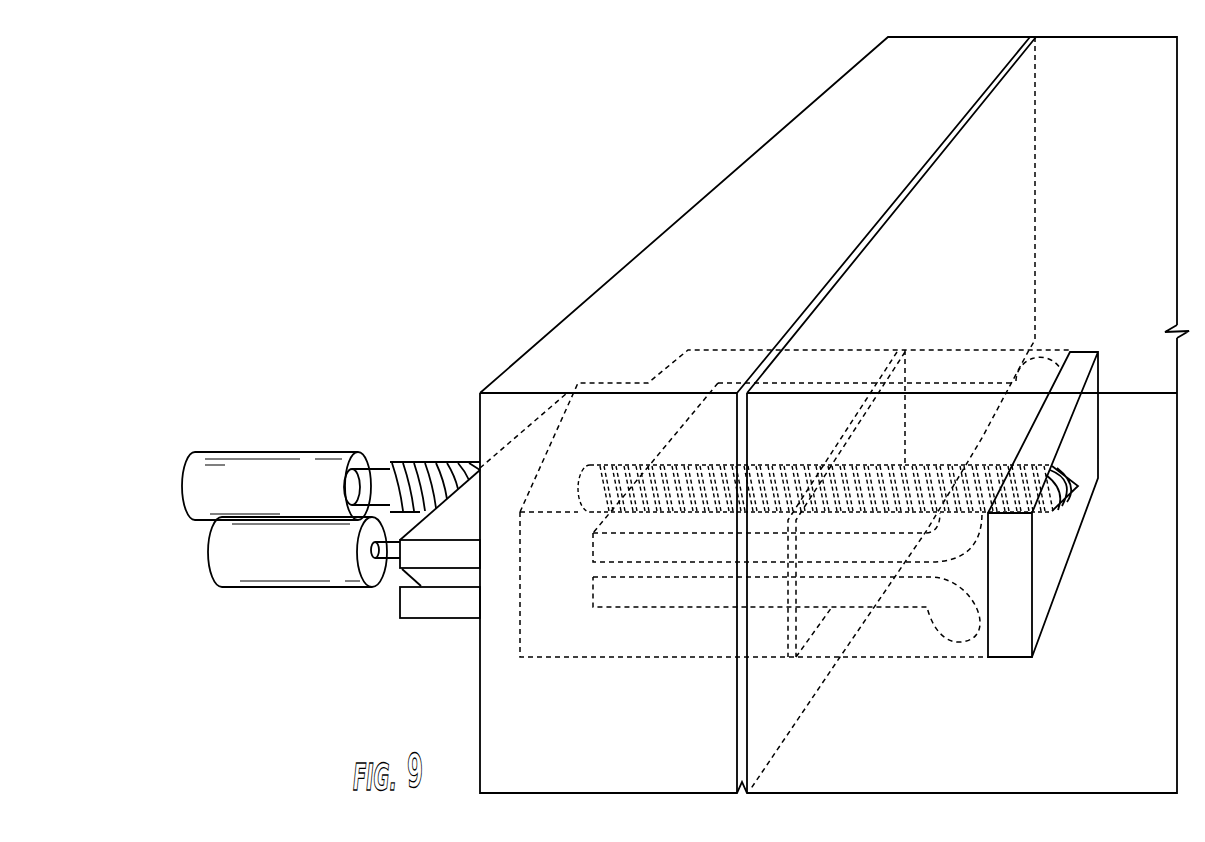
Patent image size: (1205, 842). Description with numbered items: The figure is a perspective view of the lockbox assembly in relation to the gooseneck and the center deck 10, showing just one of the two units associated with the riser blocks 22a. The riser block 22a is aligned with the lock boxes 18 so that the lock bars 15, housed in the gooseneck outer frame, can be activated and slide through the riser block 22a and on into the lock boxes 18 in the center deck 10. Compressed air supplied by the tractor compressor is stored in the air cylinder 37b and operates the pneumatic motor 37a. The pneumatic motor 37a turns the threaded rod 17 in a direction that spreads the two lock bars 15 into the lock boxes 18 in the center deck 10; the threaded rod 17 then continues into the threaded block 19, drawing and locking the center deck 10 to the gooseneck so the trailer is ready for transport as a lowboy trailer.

The center deck 10 is at (1123, 87).
The riser block 22a is at (948, 86).
The threaded block 19 is at (1020, 599).
The lock box 18 is at (901, 649).
The lock bar 15 is at (452, 569).
The threaded rod 17 is at (443, 468).
The pneumatic motor 37a is at (268, 434).
The air cylinder 37b is at (298, 588).